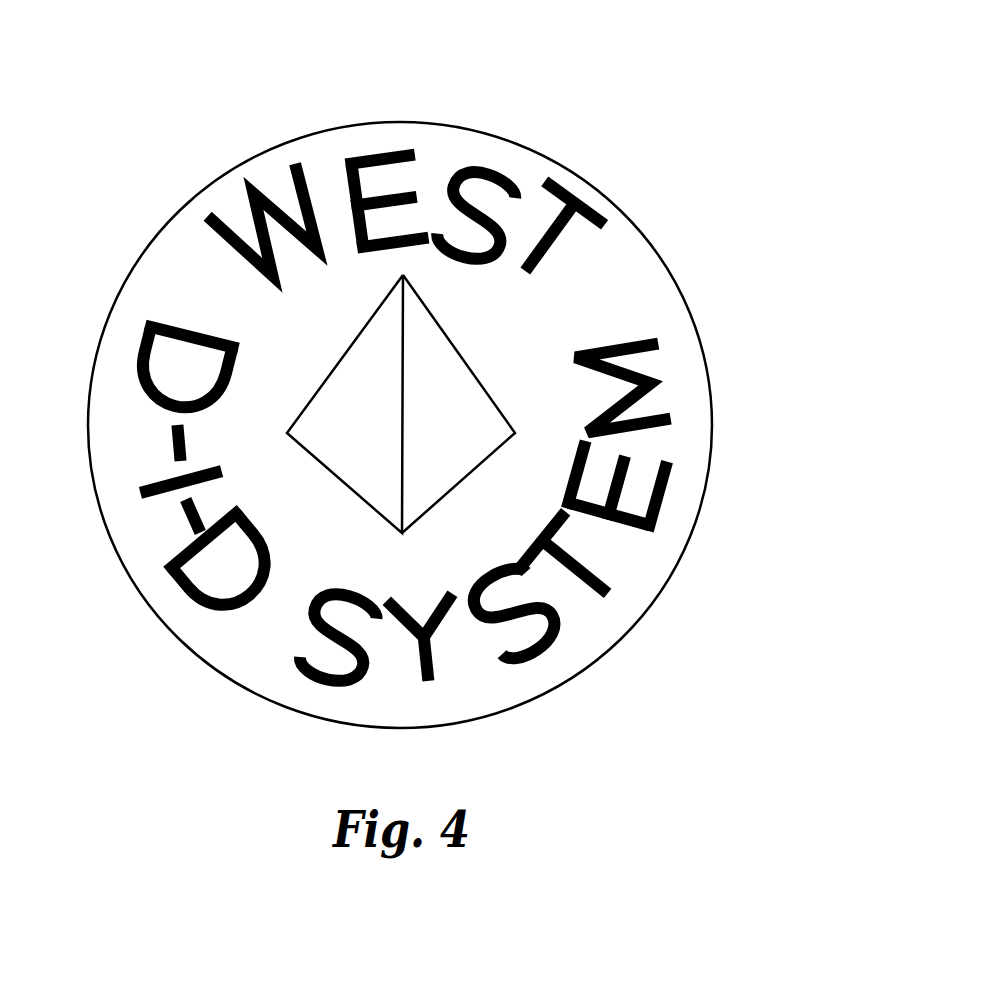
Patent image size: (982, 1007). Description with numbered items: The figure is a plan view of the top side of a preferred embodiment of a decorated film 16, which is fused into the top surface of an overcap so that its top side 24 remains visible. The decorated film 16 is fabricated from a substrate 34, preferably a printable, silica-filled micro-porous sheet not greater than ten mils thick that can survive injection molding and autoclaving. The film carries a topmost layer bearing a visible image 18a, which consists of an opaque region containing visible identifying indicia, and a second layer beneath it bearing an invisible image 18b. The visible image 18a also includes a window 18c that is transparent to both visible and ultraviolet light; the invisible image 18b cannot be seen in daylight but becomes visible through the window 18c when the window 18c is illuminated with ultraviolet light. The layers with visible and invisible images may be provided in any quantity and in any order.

The decorated film 16 is at (437, 369).
The substrate 34 is at (558, 152).
The top side 24 is at (611, 272).
The visible image 18a is at (407, 157).
The invisible image 18b is at (344, 410).
The window 18c is at (457, 486).